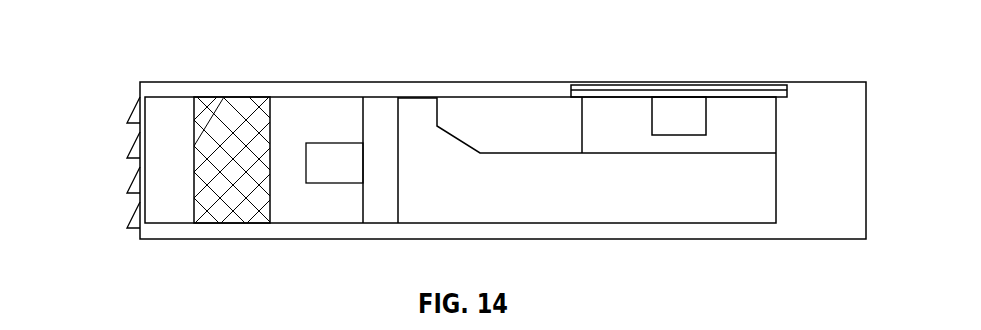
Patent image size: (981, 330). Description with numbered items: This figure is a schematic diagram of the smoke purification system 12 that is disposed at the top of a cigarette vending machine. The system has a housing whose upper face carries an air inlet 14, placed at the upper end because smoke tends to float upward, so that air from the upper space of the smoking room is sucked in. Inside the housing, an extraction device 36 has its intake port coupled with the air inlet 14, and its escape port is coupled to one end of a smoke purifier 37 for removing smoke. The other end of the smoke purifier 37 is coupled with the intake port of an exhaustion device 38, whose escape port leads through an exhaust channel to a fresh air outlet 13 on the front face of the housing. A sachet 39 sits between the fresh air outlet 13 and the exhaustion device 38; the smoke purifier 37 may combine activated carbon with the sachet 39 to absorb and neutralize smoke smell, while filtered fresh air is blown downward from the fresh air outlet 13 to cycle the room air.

The smoke purification system 12 is at (827, 152).
The fresh air outlet 13 is at (135, 150).
The air inlet 14 is at (688, 86).
The extraction device 36 is at (632, 108).
The smoke purifier 37 is at (525, 165).
The exhaustion device 38 is at (379, 128).
The sachet 39 is at (239, 117).